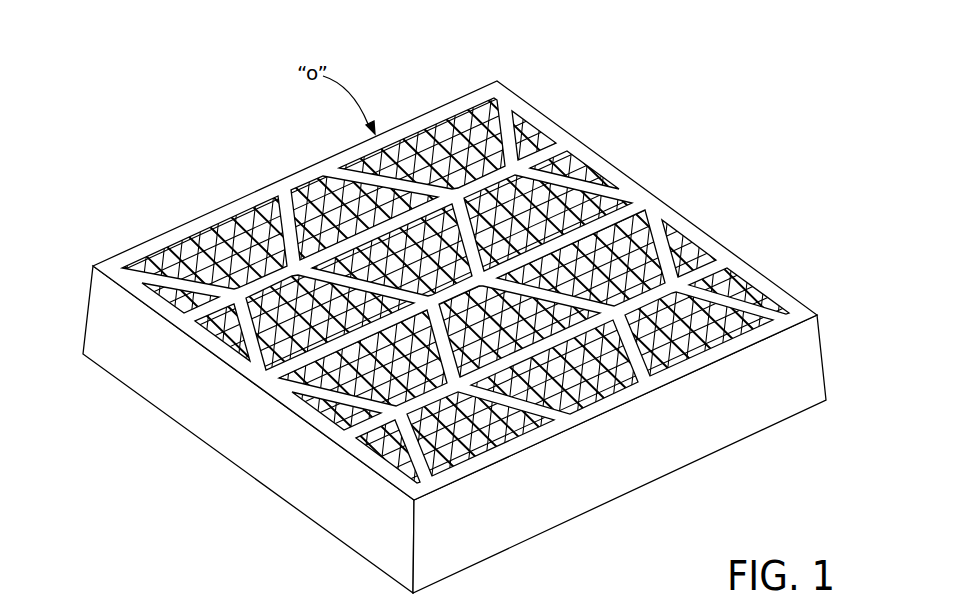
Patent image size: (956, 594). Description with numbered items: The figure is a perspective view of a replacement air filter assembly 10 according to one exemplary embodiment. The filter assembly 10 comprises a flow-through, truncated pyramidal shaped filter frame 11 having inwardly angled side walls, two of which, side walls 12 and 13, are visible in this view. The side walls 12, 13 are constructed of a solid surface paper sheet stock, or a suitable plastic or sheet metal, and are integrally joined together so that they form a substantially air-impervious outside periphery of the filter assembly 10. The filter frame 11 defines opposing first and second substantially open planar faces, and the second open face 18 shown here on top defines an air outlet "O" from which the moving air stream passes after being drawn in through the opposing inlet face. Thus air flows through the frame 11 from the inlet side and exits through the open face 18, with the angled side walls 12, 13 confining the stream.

The replacement air filter assembly 10 is at (444, 337).
The filter frame 11 is at (784, 292).
The side wall 12 is at (237, 430).
The side wall 13 is at (610, 470).
The second open planar face 18 is at (628, 188).